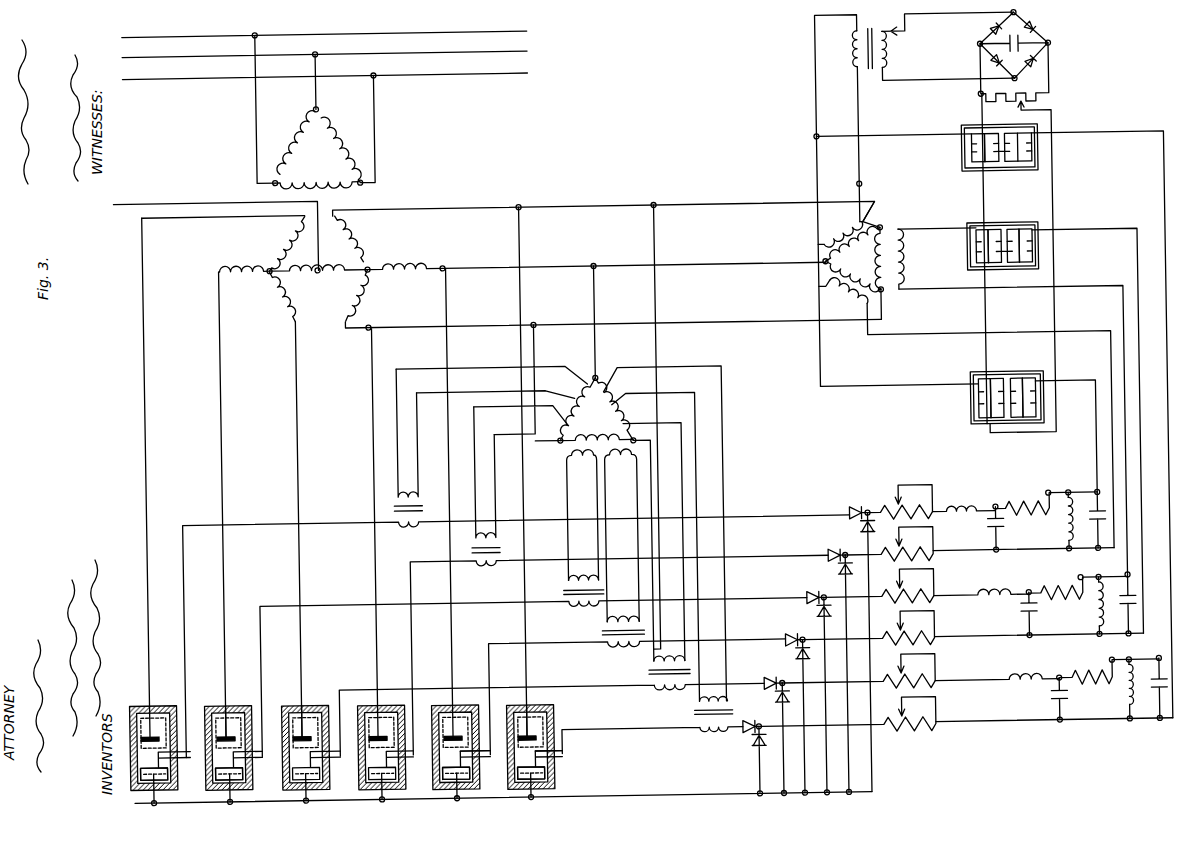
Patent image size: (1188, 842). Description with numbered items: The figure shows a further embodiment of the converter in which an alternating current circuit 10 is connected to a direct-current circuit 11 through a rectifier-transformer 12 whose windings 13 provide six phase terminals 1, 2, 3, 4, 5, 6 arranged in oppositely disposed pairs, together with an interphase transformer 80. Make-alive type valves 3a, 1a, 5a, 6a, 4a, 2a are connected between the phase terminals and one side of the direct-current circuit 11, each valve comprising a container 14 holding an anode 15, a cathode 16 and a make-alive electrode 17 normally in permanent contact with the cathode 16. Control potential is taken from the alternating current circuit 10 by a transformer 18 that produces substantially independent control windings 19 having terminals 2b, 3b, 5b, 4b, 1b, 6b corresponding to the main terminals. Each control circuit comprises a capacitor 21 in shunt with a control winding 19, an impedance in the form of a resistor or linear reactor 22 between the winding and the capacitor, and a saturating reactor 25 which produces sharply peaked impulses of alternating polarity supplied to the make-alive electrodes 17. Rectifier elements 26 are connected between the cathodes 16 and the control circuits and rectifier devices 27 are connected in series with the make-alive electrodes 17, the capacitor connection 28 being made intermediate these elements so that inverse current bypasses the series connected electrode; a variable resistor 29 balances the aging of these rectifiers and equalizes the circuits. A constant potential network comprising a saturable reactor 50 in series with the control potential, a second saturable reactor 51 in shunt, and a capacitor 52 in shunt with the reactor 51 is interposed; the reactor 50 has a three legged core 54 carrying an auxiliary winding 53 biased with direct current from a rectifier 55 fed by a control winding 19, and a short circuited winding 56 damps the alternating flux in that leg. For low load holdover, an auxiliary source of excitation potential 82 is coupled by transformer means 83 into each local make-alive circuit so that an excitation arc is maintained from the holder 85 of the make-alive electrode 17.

The alternating current circuit 10 is at (498, 74).
The direct-current circuit 11 is at (144, 182).
The rectifier-transformer 12 is at (376, 201).
The windings 13 is at (515, 458).
The interphase transformer 80 is at (324, 268).
The phase terminal 1 is at (241, 478).
The phase terminal 2 is at (352, 238).
The phase terminal 3 is at (290, 245).
The phase terminal 4 is at (599, 473).
The phase terminal 5 is at (293, 487).
The phase terminal 6 is at (616, 483).
The transformer 18 is at (960, 381).
The control winding 19 is at (908, 262).
The control winding terminal 2b is at (837, 235).
The control winding terminal 3b is at (832, 289).
The control winding terminal 5b is at (881, 209).
The control winding terminal 4b is at (900, 236).
The control winding terminal 1b is at (1004, 431).
The control winding terminal 6b is at (990, 426).
The rectifier 55 is at (1076, 39).
The saturable reactor 50 is at (962, 131).
The auxiliary winding 53 is at (999, 140).
The core 54 is at (1025, 240).
The short circuited winding 56 is at (1010, 168).
The auxiliary source of excitation potential 82 is at (600, 429).
The transformer means 83 is at (400, 528).
The holder 85 is at (560, 748).
The make-alive type valve 3a is at (146, 693).
The make-alive type valve 1a is at (220, 693).
The make-alive type valve 5a is at (297, 693).
The make-alive type valve 6a is at (373, 689).
The make-alive type valve 4a is at (448, 683).
The make-alive type valve 2a is at (523, 683).
The container 14 is at (208, 766).
The anode 15 is at (229, 703).
The cathode 16 is at (476, 778).
The make-alive electrode 17 is at (476, 757).
The capacitor connection 28 is at (866, 513).
The rectifier device 27 is at (759, 679).
The rectifier element 26 is at (770, 702).
The variable resistor 29 is at (889, 650).
The saturating reactor 25 is at (968, 512).
The resistor or linear reactor 22 is at (1018, 511).
The capacitor 21 is at (999, 535).
The second saturable reactor 51 is at (1064, 534).
The capacitor 52 is at (1096, 510).